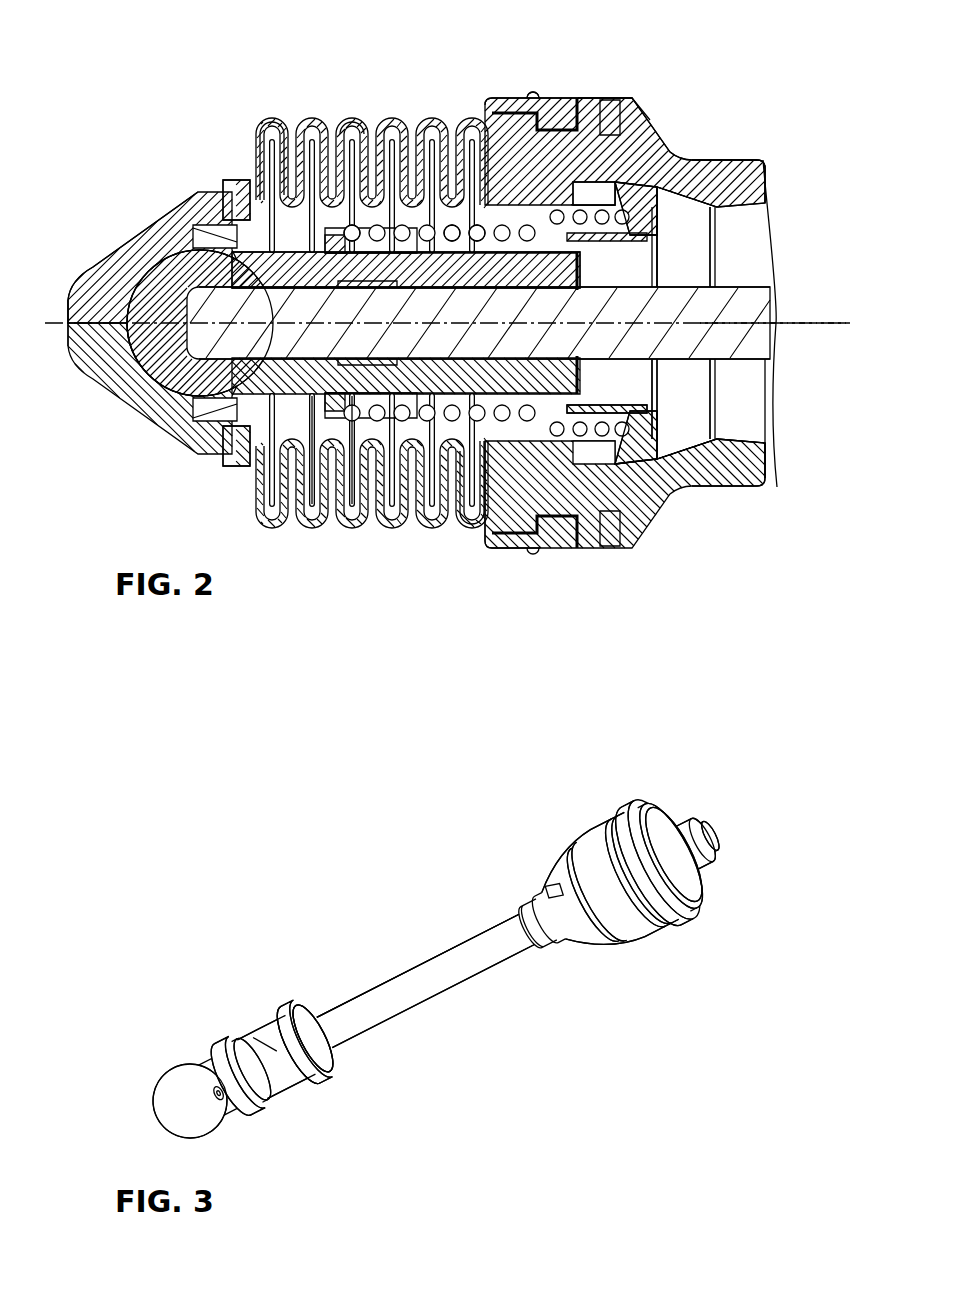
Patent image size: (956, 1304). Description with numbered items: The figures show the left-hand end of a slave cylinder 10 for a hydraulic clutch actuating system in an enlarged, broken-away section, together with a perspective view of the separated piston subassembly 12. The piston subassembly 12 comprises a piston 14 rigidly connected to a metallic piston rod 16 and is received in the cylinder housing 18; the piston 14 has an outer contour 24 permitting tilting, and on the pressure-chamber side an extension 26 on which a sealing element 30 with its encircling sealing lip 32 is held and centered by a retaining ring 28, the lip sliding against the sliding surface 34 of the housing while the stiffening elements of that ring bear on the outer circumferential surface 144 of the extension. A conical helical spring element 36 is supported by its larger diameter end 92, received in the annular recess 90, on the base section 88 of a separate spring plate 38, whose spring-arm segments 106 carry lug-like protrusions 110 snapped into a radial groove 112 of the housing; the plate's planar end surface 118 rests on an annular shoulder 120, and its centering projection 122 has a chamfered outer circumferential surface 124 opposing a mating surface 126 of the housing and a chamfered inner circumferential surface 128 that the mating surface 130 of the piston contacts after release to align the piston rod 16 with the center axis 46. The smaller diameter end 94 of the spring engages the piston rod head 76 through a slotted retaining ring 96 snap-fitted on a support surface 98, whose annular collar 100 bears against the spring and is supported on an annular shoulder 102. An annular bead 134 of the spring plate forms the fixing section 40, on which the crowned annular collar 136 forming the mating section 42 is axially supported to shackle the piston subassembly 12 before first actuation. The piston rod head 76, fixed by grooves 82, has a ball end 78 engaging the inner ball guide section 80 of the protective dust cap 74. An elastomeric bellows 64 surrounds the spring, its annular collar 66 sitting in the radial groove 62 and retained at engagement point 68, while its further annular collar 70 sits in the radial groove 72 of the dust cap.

In FIG. 2, the slave cylinder 10 is at (697, 100).
In FIG. 2, the piston subassembly 12 is at (735, 388).
In FIG. 3, the piston subassembly 12 is at (440, 1025).
In FIG. 3, the piston 14 is at (607, 930).
In FIG. 2, the piston rod 16 is at (750, 287).
In FIG. 3, the piston rod 16 is at (447, 950).
In FIG. 2, the cylinder housing 18 is at (712, 488).
In FIG. 3, the outer contour 24 is at (617, 830).
In FIG. 3, the extension 26 is at (708, 826).
In FIG. 3, the retaining ring 28 is at (712, 858).
In FIG. 3, the sealing element 30 is at (648, 812).
In FIG. 3, the sealing lip 32 is at (700, 878).
In FIG. 2, the sliding surface 34 is at (740, 212).
In FIG. 2, the spring element 36 is at (448, 228).
In FIG. 2, the spring plate 38 is at (683, 160).
In FIG. 2, the fixing section 40 is at (570, 404).
In FIG. 2, the mating section 42 is at (600, 115).
In FIG. 3, the mating section 42 is at (316, 998).
In FIG. 2, the center axis 46 is at (778, 322).
In FIG. 2, the radial groove 62 is at (560, 522).
In FIG. 2, the bellows 64 is at (350, 118).
In FIG. 2, the annular collar 66 is at (562, 125).
In FIG. 2, the engagement point 68 is at (536, 92).
In FIG. 2, the further annular collar 70 is at (240, 195).
In FIG. 2, the radial groove 72 is at (240, 472).
In FIG. 2, the protective dust cap 74 is at (112, 407).
In FIG. 2, the piston rod head 76 is at (210, 432).
In FIG. 3, the piston rod head 76 is at (318, 1072).
In FIG. 2, the ball end 78 is at (112, 385).
In FIG. 3, the ball end 78 is at (190, 1101).
In FIG. 2, the inner ball guide section 80 is at (100, 345).
In FIG. 2, the grooves 82 is at (360, 300).
In FIG. 2, the base section 88 is at (605, 190).
In FIG. 2, the annular recess 90 is at (492, 532).
In FIG. 2, the larger diameter end 92 is at (645, 470).
In FIG. 2, the smaller diameter end 94 is at (345, 240).
In FIG. 2, the retaining ring 96 is at (378, 474).
In FIG. 3, the retaining ring 96 is at (266, 1030).
In FIG. 2, the support surface 98 is at (462, 235).
In FIG. 3, the support surface 98 is at (312, 1038).
In FIG. 2, the annular collar 100 is at (312, 482).
In FIG. 3, the annular collar 100 is at (258, 1120).
In FIG. 2, the annular shoulder 102 is at (300, 170).
In FIG. 3, the annular shoulder 102 is at (243, 1068).
In FIG. 2, the segments 106 is at (612, 160).
In FIG. 2, the lug-like protrusion 110 is at (592, 135).
In FIG. 2, the radial groove 112 is at (615, 478).
In FIG. 2, the planar end surface 118 is at (715, 165).
In FIG. 2, the annular shoulder 120 is at (722, 457).
In FIG. 2, the centering projection 122 is at (695, 250).
In FIG. 2, the outer circumferential surface 124 is at (722, 193).
In FIG. 2, the mating surface 126 is at (718, 375).
In FIG. 2, the inner circumferential surface 128 is at (708, 401).
In FIG. 3, the mating surface 130 is at (686, 906).
In FIG. 2, the annular bead 134 is at (680, 237).
In FIG. 2, the annular collar 136 is at (657, 300).
In FIG. 3, the annular collar 136 is at (345, 1058).
In FIG. 3, the outer circumferential surface 144 is at (697, 806).